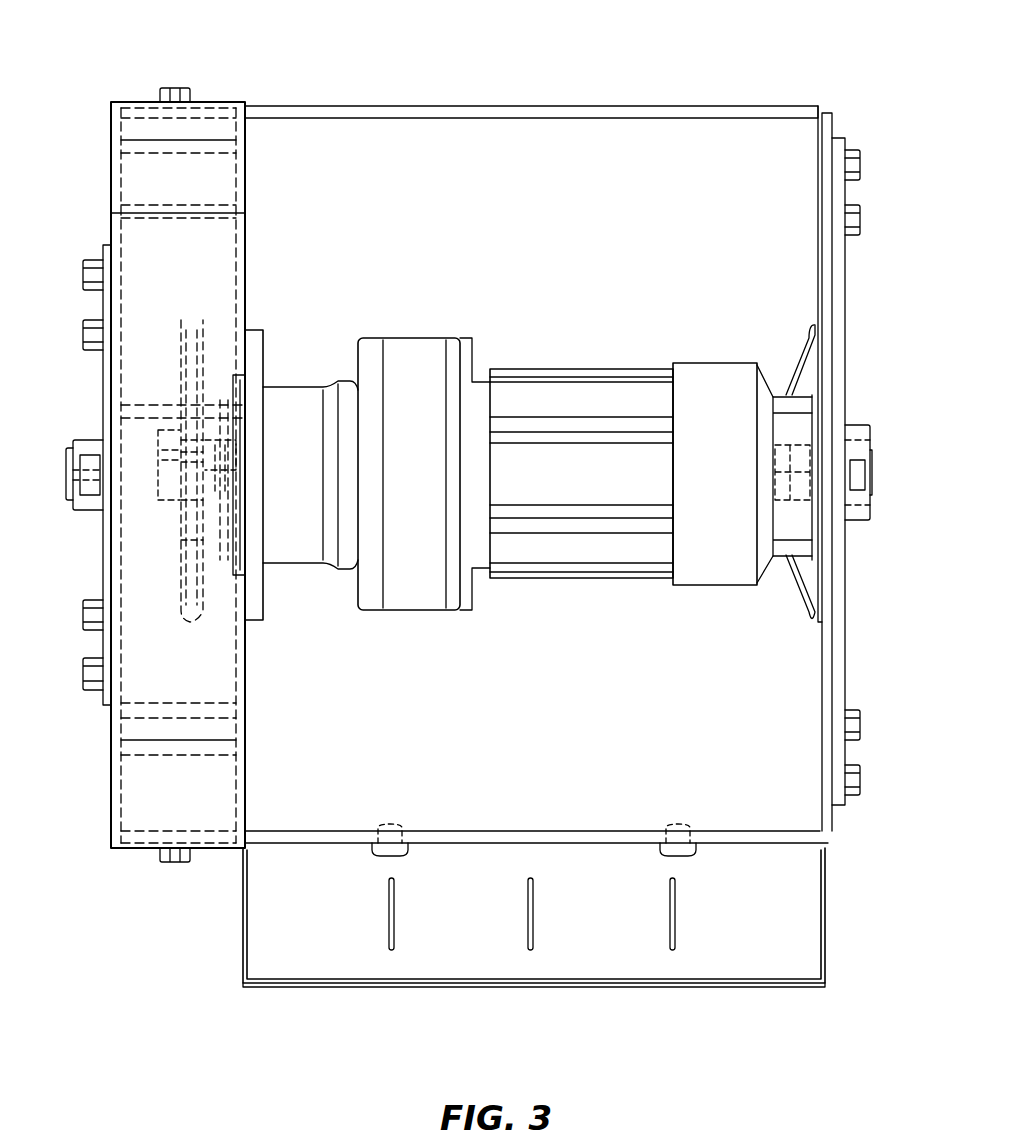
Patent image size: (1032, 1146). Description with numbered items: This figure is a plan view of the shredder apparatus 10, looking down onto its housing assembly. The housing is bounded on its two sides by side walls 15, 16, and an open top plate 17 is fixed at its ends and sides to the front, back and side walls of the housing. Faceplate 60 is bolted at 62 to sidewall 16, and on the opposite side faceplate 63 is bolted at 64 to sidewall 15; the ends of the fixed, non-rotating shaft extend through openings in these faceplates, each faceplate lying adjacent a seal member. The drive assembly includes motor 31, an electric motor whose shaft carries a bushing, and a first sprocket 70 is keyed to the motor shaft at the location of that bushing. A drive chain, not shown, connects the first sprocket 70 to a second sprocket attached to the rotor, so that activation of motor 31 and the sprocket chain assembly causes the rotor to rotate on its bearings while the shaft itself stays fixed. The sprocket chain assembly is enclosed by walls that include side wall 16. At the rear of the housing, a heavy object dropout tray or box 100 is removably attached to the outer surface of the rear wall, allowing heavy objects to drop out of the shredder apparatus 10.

The shredder apparatus 10 is at (568, 68).
The side wall 15 is at (825, 655).
The side wall 16 is at (110, 787).
The open top plate 17 is at (808, 805).
The motor 31 is at (578, 368).
The faceplate 60 is at (105, 573).
The bolts 62 is at (80, 617).
The faceplate 63 is at (848, 572).
The bolts 64 is at (862, 724).
The first sprocket 70 is at (175, 522).
The heavy object dropout tray 100 is at (768, 962).